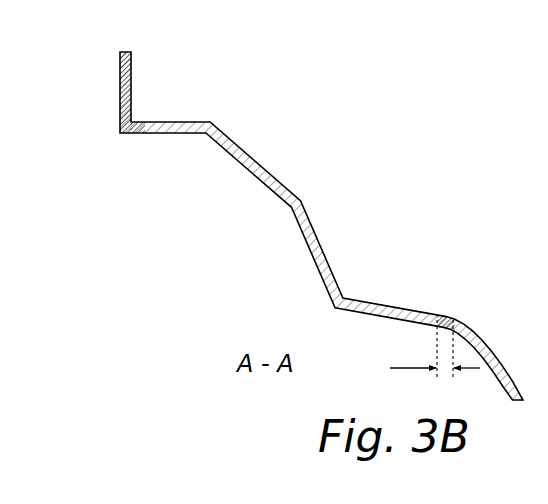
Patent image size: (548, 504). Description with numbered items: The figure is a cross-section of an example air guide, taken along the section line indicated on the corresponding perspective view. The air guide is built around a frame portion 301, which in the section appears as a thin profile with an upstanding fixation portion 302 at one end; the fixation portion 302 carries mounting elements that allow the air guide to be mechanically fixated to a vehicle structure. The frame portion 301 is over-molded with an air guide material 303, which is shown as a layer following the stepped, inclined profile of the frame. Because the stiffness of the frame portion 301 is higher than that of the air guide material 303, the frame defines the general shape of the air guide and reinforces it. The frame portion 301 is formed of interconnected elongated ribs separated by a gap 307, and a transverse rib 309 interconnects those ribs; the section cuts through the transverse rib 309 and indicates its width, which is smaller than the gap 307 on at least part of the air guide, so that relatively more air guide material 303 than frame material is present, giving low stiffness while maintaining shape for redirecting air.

The frame portion 301 is at (132, 87).
The fixation portion 302 is at (119, 102).
The air guide material 303 is at (315, 257).
The gap 307 is at (220, 188).
The transverse rib 309 is at (438, 317).